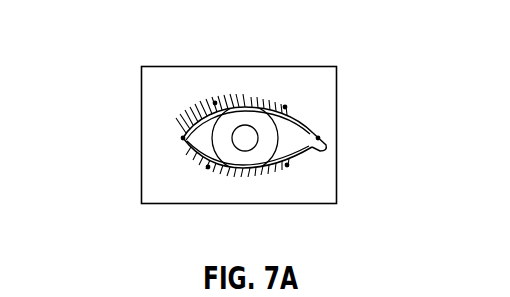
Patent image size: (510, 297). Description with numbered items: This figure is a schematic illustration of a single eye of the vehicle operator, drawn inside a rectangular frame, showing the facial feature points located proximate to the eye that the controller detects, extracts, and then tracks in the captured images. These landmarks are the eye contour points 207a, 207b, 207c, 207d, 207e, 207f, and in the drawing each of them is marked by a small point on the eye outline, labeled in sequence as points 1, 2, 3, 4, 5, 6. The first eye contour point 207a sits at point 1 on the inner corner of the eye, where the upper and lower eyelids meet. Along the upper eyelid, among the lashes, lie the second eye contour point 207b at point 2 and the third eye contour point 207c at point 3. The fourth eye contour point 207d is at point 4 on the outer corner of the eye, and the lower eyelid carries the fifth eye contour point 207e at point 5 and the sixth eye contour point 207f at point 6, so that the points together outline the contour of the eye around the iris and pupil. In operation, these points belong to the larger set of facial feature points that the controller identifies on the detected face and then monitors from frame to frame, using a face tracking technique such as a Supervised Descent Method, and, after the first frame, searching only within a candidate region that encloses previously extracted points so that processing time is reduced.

The facial feature point proximate to the eye 207a is at (181, 138).
The facial feature point proximate to the eye 207b is at (214, 102).
The facial feature point proximate to the eye 207c is at (286, 106).
The facial feature point proximate to the eye 207d is at (319, 137).
The facial feature point proximate to the eye 207e is at (289, 170).
The facial feature point proximate to the eye 207f is at (208, 169).
The landmark point 1 is at (171, 128).
The landmark point 2 is at (224, 98).
The landmark point 3 is at (293, 102).
The landmark point 4 is at (323, 127).
The landmark point 5 is at (294, 168).
The landmark point 6 is at (203, 172).